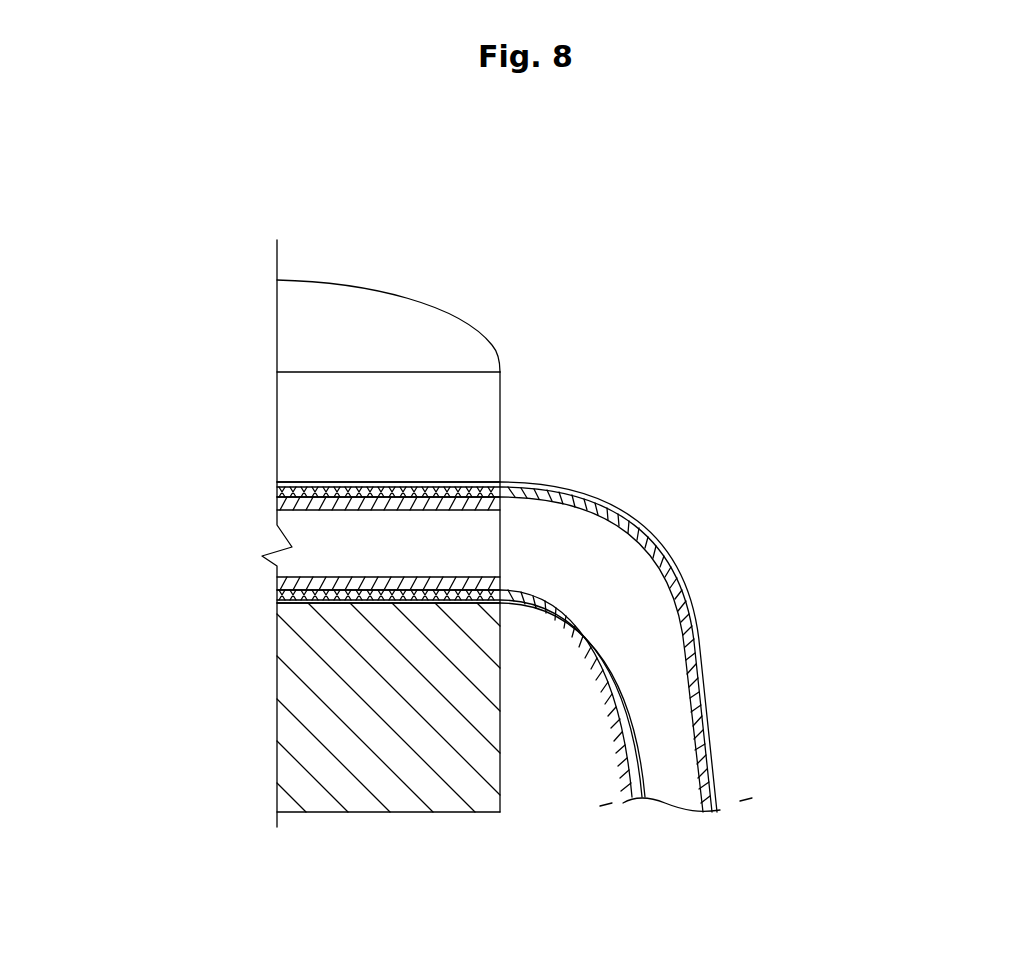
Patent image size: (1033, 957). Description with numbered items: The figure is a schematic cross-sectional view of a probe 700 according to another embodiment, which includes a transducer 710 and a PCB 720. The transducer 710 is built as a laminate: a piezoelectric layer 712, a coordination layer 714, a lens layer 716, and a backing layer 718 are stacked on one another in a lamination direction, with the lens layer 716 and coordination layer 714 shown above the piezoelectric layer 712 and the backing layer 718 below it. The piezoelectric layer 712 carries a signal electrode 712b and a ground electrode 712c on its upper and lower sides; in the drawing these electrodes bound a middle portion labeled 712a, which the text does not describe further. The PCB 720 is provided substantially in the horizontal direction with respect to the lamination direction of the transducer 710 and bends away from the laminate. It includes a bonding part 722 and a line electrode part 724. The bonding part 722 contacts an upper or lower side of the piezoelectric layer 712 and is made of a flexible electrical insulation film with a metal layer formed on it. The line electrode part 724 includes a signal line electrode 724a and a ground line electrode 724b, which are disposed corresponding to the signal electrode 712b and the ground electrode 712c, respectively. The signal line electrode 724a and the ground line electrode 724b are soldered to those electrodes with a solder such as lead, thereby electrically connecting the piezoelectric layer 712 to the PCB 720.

The probe 700 is at (520, 234).
The transducer 710 is at (205, 345).
The piezoelectric layer 712 is at (150, 495).
The core layer 712a is at (272, 556).
The signal electrode 712b is at (292, 497).
The ground electrode 712c is at (292, 581).
The coordination layer 714 is at (315, 437).
The lens layer 716 is at (325, 358).
The backing layer 718 is at (305, 704).
The PCB 720 is at (735, 713).
The bonding part 722 is at (365, 486).
The line electrode part 724 is at (737, 465).
The signal line electrode 724a is at (557, 488).
The ground line electrode 724b is at (570, 607).